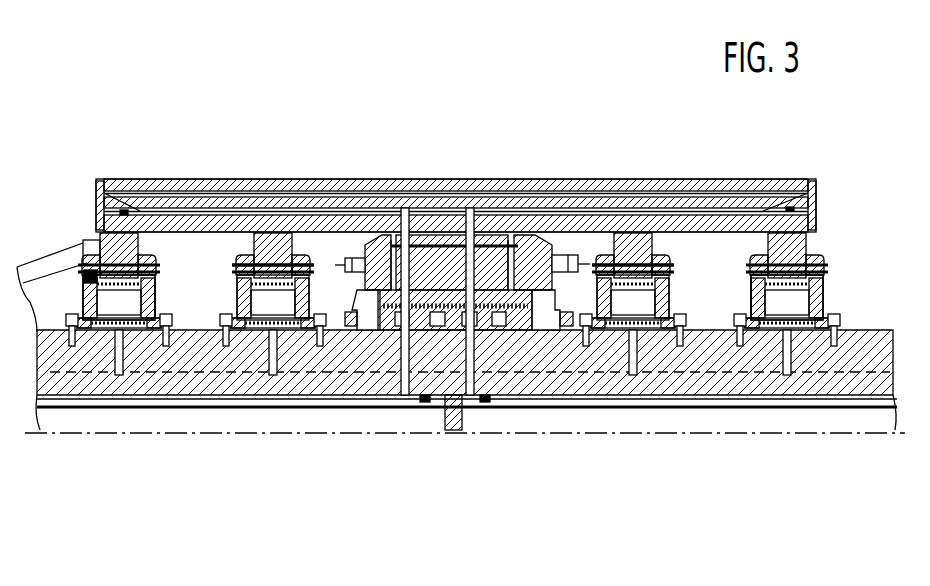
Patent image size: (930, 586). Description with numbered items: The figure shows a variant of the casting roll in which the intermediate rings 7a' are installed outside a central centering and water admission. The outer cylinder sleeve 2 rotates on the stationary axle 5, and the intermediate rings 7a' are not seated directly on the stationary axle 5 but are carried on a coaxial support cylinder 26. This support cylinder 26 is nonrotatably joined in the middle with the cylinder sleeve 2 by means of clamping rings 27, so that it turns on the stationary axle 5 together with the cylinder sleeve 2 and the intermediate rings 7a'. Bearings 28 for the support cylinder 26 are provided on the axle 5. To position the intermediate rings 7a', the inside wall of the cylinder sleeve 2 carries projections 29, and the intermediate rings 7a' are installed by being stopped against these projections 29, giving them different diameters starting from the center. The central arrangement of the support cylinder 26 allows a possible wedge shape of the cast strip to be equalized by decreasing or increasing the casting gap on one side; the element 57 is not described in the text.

The cylinder sleeve 2 is at (226, 197).
The stationary axle 5 is at (310, 378).
The intermediate rings 7a' is at (453, 246).
The support cylinder 26 is at (458, 245).
The clamping rings 27 is at (459, 223).
The bearings 28 is at (372, 318).
The projections 29 is at (292, 262).
The bearing housing 57 is at (108, 298).